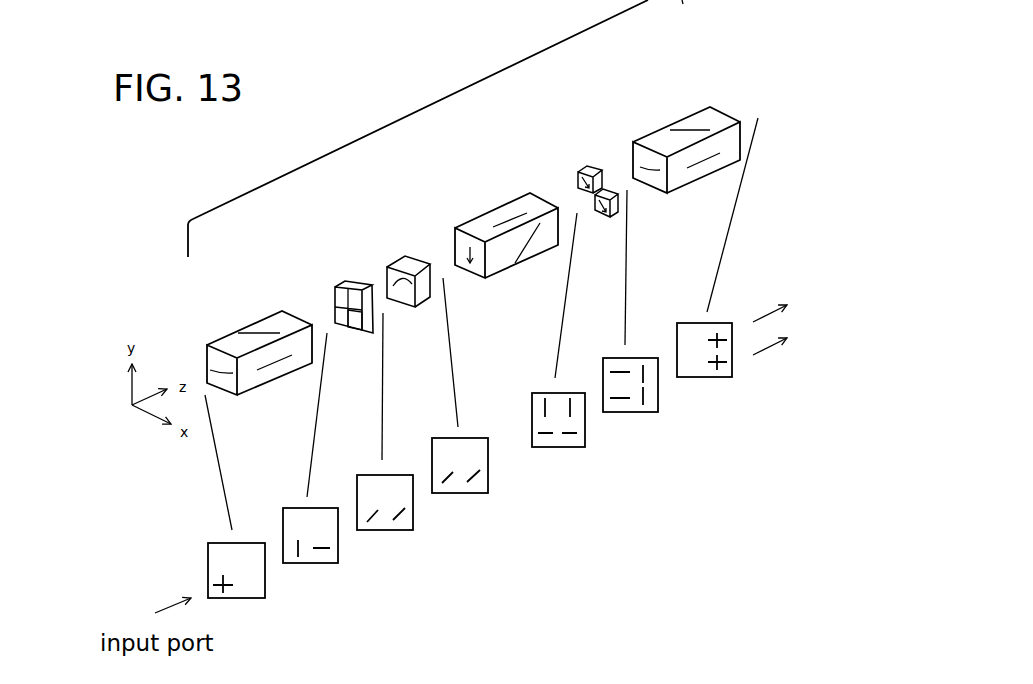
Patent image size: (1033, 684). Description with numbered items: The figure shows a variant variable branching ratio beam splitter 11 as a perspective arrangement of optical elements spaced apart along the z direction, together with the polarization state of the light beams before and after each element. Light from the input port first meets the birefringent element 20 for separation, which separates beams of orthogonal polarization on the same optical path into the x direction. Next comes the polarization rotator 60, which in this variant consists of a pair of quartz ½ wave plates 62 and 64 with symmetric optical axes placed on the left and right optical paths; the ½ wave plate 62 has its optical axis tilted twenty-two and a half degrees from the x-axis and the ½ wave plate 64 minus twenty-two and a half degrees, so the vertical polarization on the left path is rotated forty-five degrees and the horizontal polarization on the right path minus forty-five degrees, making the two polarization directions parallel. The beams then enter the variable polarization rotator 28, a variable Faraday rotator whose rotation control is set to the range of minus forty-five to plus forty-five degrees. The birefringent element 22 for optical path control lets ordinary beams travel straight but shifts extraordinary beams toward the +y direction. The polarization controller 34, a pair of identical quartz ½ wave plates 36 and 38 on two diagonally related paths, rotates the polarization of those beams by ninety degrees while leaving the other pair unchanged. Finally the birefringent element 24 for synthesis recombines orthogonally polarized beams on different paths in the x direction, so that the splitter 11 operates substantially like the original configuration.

The variable branching ratio beam splitter 11 is at (418, 128).
The birefringent element for separation 20 is at (258, 323).
The birefringent element for optical path control 22 is at (478, 220).
The birefringent element for synthesis 24 is at (682, 122).
The variable polarization rotator 28 is at (387, 247).
The polarization controller 34 is at (575, 188).
The ½ wave plate 36 is at (578, 176).
The ½ wave plate 38 is at (598, 220).
The polarization rotator 60 is at (331, 297).
The ½ wave plate 62 is at (337, 297).
The ½ wave plate 64 is at (361, 323).